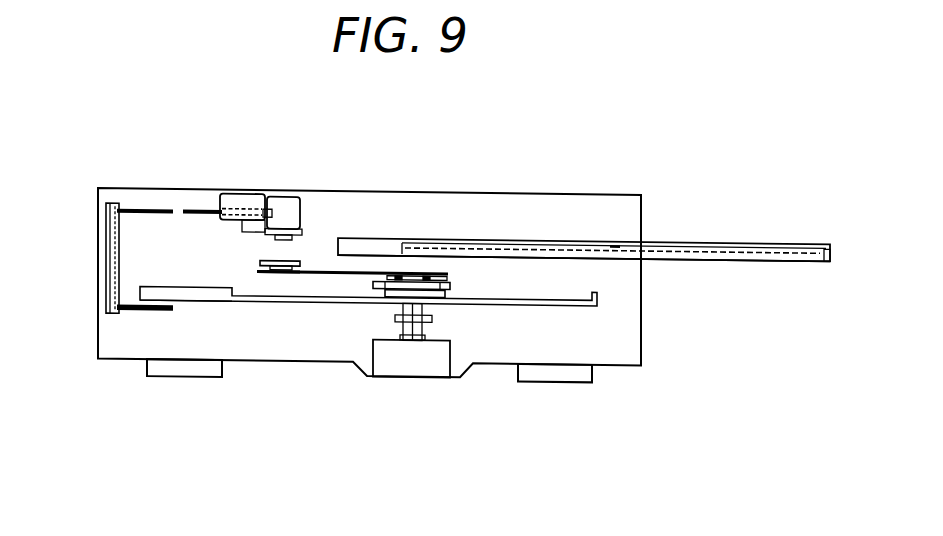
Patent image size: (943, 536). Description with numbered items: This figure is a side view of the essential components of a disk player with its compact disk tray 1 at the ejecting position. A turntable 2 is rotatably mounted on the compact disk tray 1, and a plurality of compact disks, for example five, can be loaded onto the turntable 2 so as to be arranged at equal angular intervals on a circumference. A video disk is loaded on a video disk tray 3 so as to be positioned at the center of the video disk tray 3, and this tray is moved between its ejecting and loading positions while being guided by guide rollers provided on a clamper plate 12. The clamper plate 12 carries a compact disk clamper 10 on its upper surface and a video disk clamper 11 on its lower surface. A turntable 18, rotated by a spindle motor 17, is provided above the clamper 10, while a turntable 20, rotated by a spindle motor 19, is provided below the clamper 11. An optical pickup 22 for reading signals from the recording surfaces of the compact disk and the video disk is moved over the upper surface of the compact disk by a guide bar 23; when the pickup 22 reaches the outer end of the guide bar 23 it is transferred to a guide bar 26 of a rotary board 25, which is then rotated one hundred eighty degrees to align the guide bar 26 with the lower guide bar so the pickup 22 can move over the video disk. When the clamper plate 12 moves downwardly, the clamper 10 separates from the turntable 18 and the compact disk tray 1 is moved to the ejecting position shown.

The compact disk tray 1 is at (760, 253).
The turntable 2 is at (658, 240).
The video disk tray 3 is at (602, 293).
The compact disk clamper 10 is at (302, 261).
The video disk clamper 11 is at (422, 269).
The clamper plate 12 is at (335, 272).
The spindle motor 17 is at (283, 203).
The turntable 18 is at (292, 259).
The spindle motor 19 is at (425, 361).
The turntable 20 is at (433, 291).
The optical pickup 22 is at (240, 196).
The guide bar 23 is at (200, 204).
The rotary board 25 is at (103, 265).
The guide bar 26 is at (138, 206).